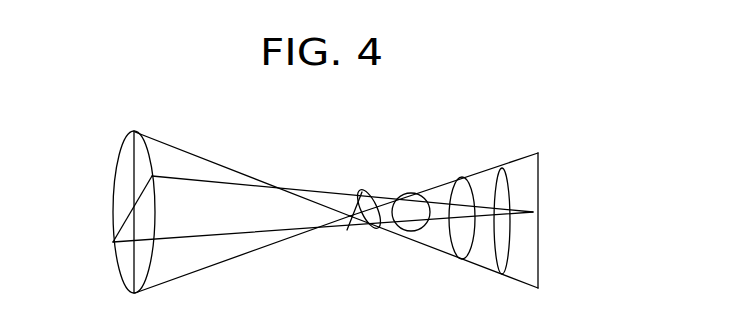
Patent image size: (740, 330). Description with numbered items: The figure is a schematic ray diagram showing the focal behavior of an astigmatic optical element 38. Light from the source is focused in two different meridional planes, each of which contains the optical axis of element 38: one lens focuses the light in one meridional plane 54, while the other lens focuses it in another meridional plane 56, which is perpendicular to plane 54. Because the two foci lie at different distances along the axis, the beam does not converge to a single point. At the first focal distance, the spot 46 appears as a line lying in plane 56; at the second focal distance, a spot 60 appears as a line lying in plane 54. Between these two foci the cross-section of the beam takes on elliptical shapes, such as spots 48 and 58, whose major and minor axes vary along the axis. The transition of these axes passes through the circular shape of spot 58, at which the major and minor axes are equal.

The astigmatic optical element 38 is at (117, 192).
The meridional plane 54 is at (183, 149).
The meridional plane 56 is at (232, 235).
The spot 46 is at (359, 191).
The spot 48 is at (368, 232).
The spot 58 is at (405, 193).
The spot 60 is at (533, 237).